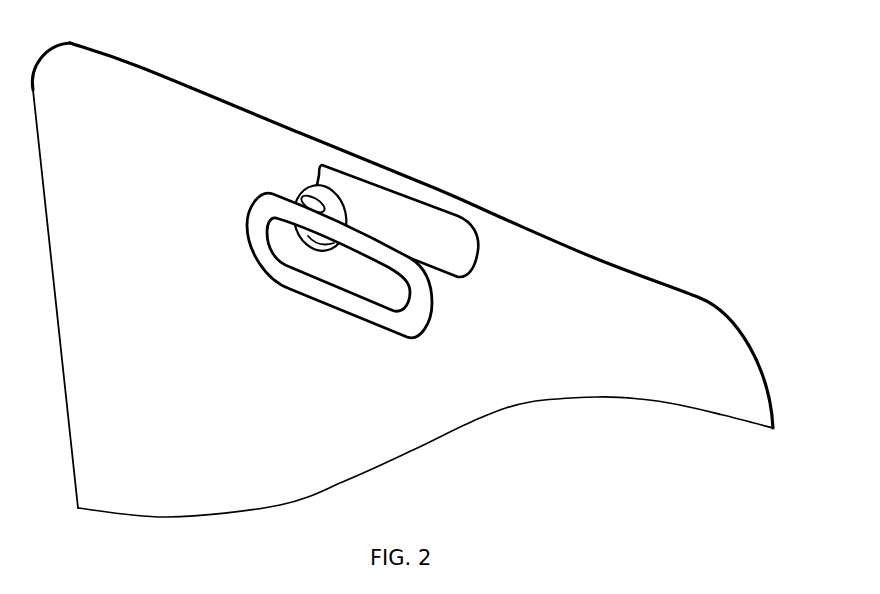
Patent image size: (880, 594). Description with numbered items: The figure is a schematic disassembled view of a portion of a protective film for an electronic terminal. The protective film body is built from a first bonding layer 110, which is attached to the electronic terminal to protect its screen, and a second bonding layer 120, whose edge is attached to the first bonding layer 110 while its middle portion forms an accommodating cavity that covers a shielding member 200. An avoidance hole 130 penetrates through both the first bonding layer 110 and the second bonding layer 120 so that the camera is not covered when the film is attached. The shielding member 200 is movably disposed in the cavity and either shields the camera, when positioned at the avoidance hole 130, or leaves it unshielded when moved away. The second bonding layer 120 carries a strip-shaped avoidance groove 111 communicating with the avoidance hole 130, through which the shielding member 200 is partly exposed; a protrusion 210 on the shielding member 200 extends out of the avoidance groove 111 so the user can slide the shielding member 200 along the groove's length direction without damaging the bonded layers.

The first bonding layer 110 is at (527, 270).
The avoidance groove 111 is at (373, 257).
The second bonding layer 120 is at (258, 200).
The avoidance hole 130 is at (371, 178).
The shielding member 200 is at (308, 188).
The protrusion 210 is at (319, 184).